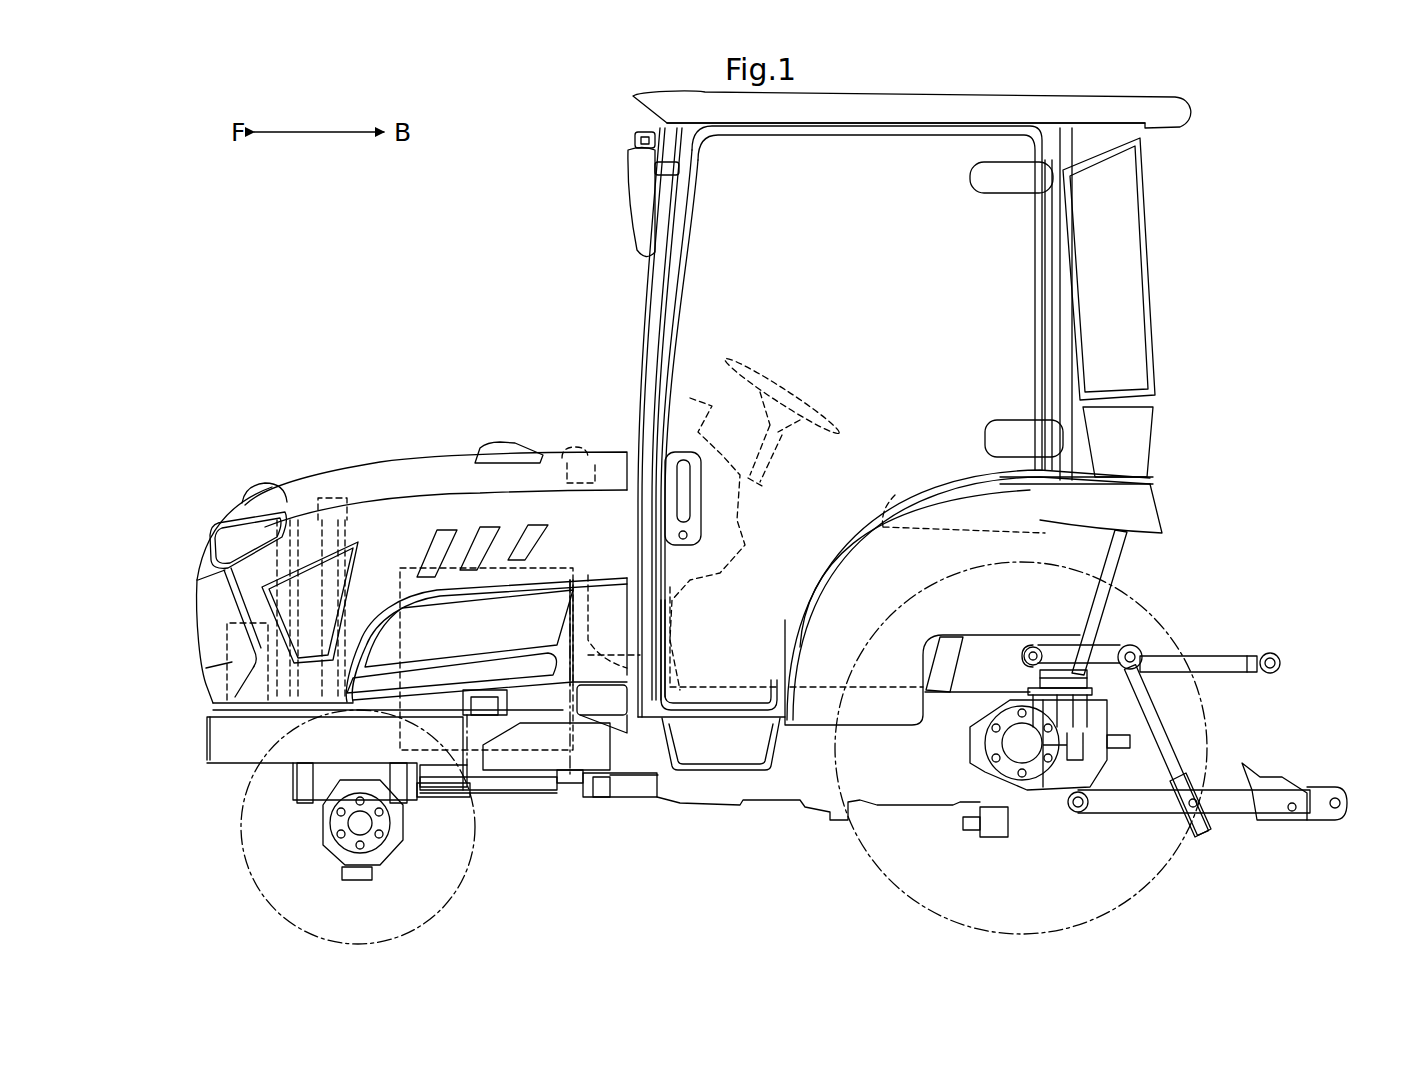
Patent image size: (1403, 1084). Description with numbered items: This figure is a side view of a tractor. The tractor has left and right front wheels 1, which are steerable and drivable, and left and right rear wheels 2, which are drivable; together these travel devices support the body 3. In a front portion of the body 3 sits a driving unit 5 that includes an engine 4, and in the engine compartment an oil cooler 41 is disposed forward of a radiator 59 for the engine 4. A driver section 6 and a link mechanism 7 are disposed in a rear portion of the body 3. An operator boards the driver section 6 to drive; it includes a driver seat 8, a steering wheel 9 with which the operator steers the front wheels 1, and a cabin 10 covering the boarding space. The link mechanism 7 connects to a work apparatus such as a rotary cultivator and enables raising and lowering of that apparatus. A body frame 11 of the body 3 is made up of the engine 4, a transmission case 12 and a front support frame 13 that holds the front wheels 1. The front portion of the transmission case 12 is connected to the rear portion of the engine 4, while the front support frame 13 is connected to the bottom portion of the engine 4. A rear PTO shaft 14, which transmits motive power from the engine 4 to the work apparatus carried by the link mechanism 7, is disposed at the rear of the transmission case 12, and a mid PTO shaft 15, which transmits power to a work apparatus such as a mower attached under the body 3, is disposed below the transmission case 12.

The front wheel 1 is at (453, 897).
The rear wheel 2 is at (1148, 880).
The body 3 is at (594, 839).
The engine 4 is at (413, 565).
The driving unit 5 is at (470, 426).
The driver section 6 is at (606, 264).
The link mechanism 7 is at (1199, 604).
The driver seat 8 is at (887, 498).
The steering wheel 9 is at (772, 376).
The cabin 10 is at (1133, 280).
The body frame 11 is at (696, 819).
The transmission case 12 is at (912, 797).
The front support frame 13 is at (230, 750).
The rear PTO shaft 14 is at (1133, 730).
The mid PTO shaft 15 is at (970, 833).
The oil cooler 41 is at (290, 533).
The radiator 59 is at (330, 495).